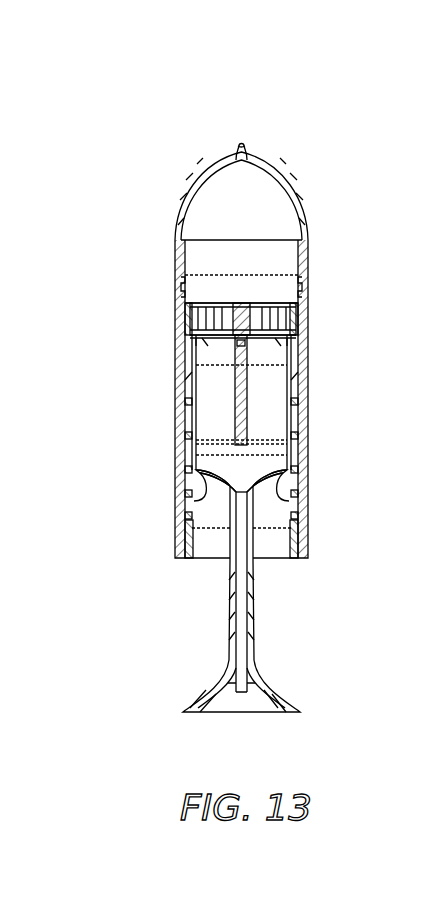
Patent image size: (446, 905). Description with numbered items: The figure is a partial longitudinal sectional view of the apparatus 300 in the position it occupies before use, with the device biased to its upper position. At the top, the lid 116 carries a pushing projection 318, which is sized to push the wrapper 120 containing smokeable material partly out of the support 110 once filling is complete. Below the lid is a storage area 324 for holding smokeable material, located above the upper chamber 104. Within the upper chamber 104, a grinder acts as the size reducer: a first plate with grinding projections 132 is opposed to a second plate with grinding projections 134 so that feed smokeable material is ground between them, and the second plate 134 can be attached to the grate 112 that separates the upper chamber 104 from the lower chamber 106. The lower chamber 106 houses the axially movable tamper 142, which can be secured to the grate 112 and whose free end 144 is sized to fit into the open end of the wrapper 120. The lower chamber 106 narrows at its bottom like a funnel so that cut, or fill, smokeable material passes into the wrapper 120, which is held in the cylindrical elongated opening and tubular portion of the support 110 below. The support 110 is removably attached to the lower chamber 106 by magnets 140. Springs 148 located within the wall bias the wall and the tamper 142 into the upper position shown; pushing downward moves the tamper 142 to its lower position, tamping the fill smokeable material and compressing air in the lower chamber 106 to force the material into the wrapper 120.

The apparatus 300 is at (196, 128).
The pushing projection 318 is at (243, 139).
The lid 116 is at (190, 207).
The storage area 324 is at (280, 285).
The first plate with grinding projections 132 is at (215, 326).
The second plate with grinding projections 134 is at (225, 342).
The upper chamber 104 is at (298, 327).
The grate 112 is at (195, 376).
The lower chamber 106 is at (272, 373).
The tamper 142 is at (250, 400).
The free end 144 is at (250, 440).
The spring 148 is at (190, 441).
The magnet 140 is at (186, 496).
The wrapper 120 is at (243, 603).
The support 110 is at (250, 676).